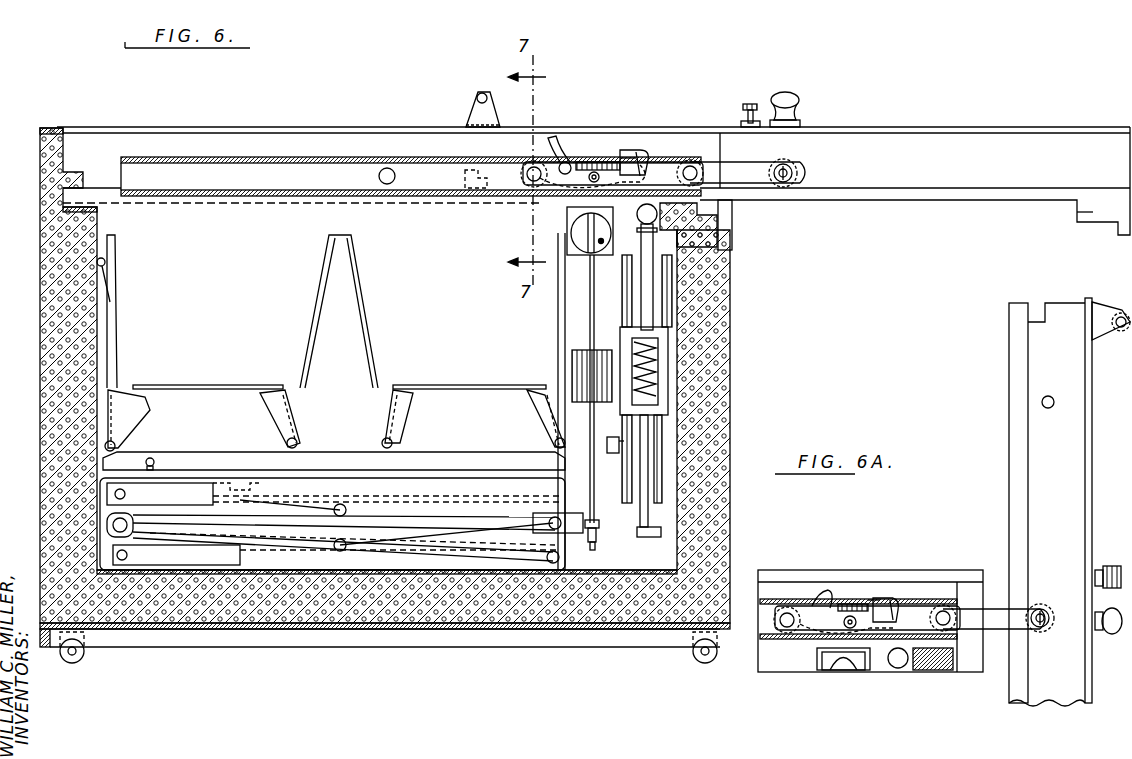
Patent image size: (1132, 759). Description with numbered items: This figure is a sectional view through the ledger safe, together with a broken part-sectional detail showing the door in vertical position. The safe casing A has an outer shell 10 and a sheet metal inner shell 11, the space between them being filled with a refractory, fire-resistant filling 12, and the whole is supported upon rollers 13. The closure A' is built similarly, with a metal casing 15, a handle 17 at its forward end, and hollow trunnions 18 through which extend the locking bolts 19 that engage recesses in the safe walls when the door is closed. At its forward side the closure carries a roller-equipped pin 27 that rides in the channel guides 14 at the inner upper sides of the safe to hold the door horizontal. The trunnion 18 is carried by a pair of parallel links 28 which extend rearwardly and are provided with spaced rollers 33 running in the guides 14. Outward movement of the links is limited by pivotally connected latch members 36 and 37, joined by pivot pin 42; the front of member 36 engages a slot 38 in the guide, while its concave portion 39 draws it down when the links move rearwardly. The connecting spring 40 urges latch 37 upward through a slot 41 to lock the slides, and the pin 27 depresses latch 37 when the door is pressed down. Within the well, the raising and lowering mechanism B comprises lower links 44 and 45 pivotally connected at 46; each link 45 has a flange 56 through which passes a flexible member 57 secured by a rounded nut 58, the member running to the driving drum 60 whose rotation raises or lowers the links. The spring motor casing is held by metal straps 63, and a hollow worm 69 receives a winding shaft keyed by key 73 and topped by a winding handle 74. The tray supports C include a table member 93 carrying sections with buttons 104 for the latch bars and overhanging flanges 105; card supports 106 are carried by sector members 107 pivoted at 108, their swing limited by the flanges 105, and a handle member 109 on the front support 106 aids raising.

In FIG. 6, the shell 10 is at (40, 318).
In FIG. 6, the sheet metal inner shell 11 is at (100, 232).
In FIG. 6, the filling 12 is at (278, 612).
In FIG. 6, the rollers 13 is at (84, 660).
In FIG. 6, the channel bars or guides 14 is at (490, 192).
In FIG. 6A, the channel bars or guides 14 is at (942, 604).
In FIG. 6, the casing 15 is at (985, 128).
In FIG. 6A, the casing 15 is at (1093, 520).
In FIG. 6, the handle 17 is at (476, 100).
In FIG. 6A, the handle 17 is at (1097, 312).
In FIG. 6, the hollow trunnions 18 is at (797, 175).
In FIG. 6A, the hollow trunnions 18 is at (1047, 627).
In FIG. 6, the locking bolts 19 is at (795, 165).
In FIG. 6A, the locking bolts 19 is at (1046, 610).
In FIG. 6, the roller-equipped pin 27 is at (568, 160).
In FIG. 6A, the roller-equipped pin 27 is at (1048, 408).
In FIG. 6, the parallel links 28 is at (740, 168).
In FIG. 6A, the parallel links 28 is at (1005, 626).
In FIG. 6, the rollers 33 is at (522, 178).
In FIG. 6A, the rollers 33 is at (958, 620).
In FIG. 6, the latch member 36 is at (632, 150).
In FIG. 6A, the latch member 36 is at (885, 598).
In FIG. 6, the latch member 37 is at (560, 188).
In FIG. 6A, the latch member 37 is at (815, 600).
In FIG. 6, the slot 38 is at (645, 152).
In FIG. 6A, the slot 38 is at (896, 602).
In FIG. 6, the concave or beveled portion 39 is at (622, 158).
In FIG. 6A, the concave or beveled portion 39 is at (880, 586).
In FIG. 6, the connecting spring 40 is at (594, 170).
In FIG. 6A, the connecting spring 40 is at (853, 604).
In FIG. 6, the slot 41 is at (552, 136).
In FIG. 6A, the slot 41 is at (829, 590).
In FIG. 6, the pivot pin 42 is at (603, 176).
In FIG. 6A, the pivot pin 42 is at (858, 622).
In FIG. 6, the lower link 44 is at (500, 560).
In FIG. 6, the lower link 45 is at (440, 575).
In FIG. 6, the pivot 46 is at (345, 578).
In FIG. 6, the flange 56 is at (592, 520).
In FIG. 6, the flexible member 57 is at (594, 495).
In FIG. 6, the rounded nut 58 is at (596, 536).
In FIG. 6, the driving drum 60 is at (574, 374).
In FIG. 6, the metal straps 63 is at (613, 455).
In FIG. 6, the worm 69 is at (652, 375).
In FIG. 6, the key 73 is at (632, 458).
In FIG. 6, the winding handle 74 is at (642, 222).
In FIG. 6A, the winding handle 74 is at (896, 668).
In FIG. 6, the table member 93 is at (445, 462).
In FIG. 6, the button 104 is at (153, 459).
In FIG. 6, the overhanging flanges 105 is at (183, 385).
In FIG. 6, the card supports 106 is at (118, 305).
In FIG. 6, the sector members 107 is at (122, 395).
In FIG. 6, the pivot 108 is at (118, 435).
In FIG. 6, the handle member 109 is at (108, 275).
In FIG. 6, the safe casing A is at (593, 266).
In FIG. 6A, the safe casing A is at (870, 600).
In FIG. 6, the closure A' is at (823, 140).
In FIG. 6A, the closure A' is at (1023, 503).
In FIG. 6, the raising and lowering mechanism B is at (545, 548).
In FIG. 6, the file or tray supports C is at (550, 420).